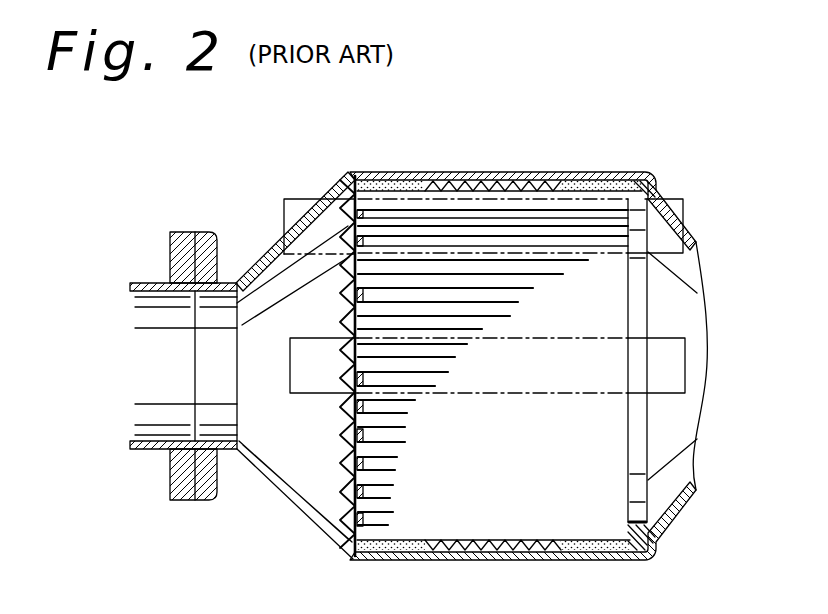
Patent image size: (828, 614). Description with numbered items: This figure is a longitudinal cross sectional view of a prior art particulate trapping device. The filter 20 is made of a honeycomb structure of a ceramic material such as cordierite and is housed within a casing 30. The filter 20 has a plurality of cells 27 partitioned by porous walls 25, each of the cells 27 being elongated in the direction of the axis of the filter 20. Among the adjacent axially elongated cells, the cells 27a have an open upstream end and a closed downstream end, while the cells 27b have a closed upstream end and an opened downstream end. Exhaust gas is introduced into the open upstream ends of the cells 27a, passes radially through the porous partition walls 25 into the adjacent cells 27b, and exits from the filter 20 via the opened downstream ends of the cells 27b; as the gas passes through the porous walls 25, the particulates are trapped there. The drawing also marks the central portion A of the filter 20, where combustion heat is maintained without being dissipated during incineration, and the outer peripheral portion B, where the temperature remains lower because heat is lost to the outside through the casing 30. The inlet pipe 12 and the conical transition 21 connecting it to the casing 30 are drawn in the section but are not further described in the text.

The exhaust inlet pipe 12 is at (128, 450).
The conical diffuser portion 21 is at (340, 226).
The porous partition wall 25 is at (387, 218).
The cell with open upstream end 27a is at (443, 227).
The cell with open downstream end 27b is at (533, 243).
The cell 27 is at (576, 193).
The filter 20 is at (517, 522).
The casing 30 is at (458, 557).
The central portion of the filter A is at (663, 337).
The peripheral portion of the filter B is at (674, 173).